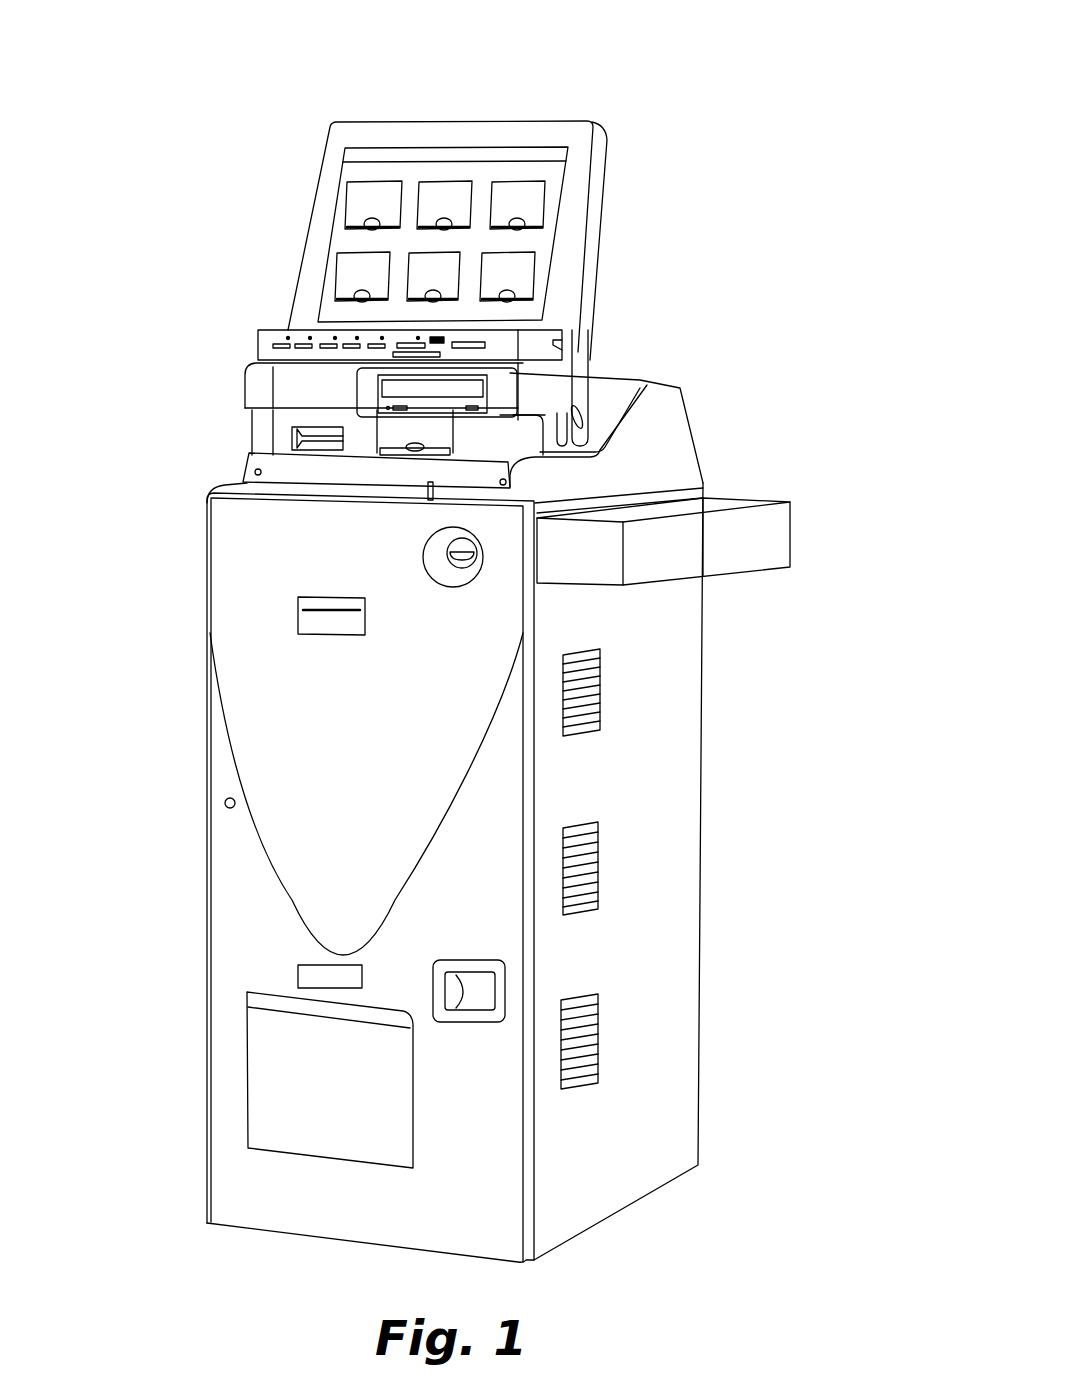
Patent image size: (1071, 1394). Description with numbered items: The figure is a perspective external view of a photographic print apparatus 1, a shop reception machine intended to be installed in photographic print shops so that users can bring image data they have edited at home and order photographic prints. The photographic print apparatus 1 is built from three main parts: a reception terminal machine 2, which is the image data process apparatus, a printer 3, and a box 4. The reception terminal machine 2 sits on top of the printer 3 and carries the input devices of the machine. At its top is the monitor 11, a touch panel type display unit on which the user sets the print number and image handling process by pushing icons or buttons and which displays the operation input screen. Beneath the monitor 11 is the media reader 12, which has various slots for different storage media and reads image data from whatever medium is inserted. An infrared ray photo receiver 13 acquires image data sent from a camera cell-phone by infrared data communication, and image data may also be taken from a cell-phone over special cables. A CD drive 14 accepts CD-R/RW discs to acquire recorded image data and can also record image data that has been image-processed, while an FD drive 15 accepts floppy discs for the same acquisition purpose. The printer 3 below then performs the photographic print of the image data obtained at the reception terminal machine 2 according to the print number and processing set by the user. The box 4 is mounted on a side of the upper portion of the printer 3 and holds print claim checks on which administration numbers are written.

The photographic print apparatus 1 is at (688, 114).
The reception terminal machine 2 is at (282, 183).
The printer 3 is at (188, 590).
The box 4 is at (672, 552).
The monitor 11 is at (563, 212).
The media reader 12 is at (333, 345).
The infrared ray photo receiver 13 is at (440, 343).
The CD drive 14 is at (427, 388).
The FD drive 15 is at (355, 470).